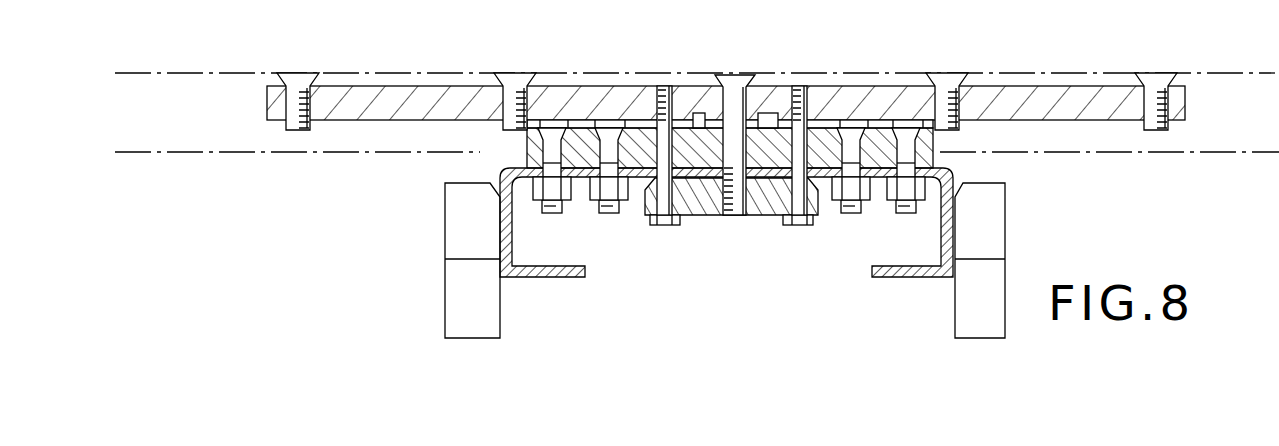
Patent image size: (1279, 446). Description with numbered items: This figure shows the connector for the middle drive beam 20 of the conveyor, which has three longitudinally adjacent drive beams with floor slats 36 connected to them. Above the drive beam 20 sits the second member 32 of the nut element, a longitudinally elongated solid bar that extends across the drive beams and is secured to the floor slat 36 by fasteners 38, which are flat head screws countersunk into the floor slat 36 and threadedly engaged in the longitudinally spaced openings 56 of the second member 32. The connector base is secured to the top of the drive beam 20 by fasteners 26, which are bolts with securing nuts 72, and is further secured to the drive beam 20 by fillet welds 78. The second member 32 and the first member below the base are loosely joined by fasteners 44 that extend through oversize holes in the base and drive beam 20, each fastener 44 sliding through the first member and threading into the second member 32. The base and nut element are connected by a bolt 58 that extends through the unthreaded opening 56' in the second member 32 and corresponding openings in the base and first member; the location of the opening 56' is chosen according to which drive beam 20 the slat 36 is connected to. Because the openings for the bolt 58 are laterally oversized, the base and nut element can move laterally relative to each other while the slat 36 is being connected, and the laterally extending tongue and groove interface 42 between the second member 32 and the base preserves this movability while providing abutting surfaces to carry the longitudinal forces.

The drive beam 20 is at (517, 208).
The fasteners 26 is at (552, 226).
The second member 32 is at (378, 116).
The floor slat 36 is at (1025, 70).
The fasteners 38 is at (300, 73).
The tongue and groove interface 42 is at (697, 108).
The fasteners 44 is at (674, 225).
The openings 56 is at (733, 145).
The opening 56' is at (731, 119).
The bolt 58 is at (762, 110).
The securing nuts 72 is at (577, 212).
The fillet welds 78 is at (522, 168).